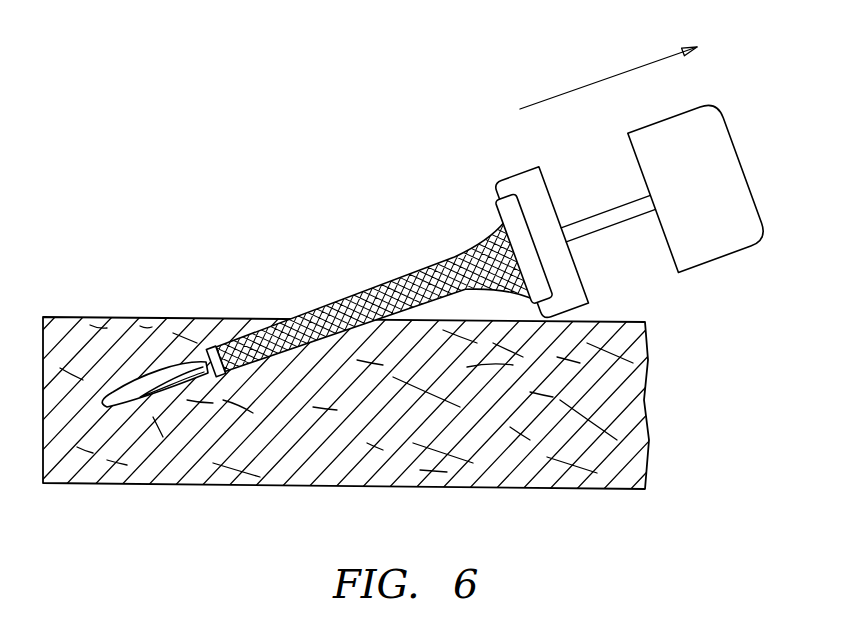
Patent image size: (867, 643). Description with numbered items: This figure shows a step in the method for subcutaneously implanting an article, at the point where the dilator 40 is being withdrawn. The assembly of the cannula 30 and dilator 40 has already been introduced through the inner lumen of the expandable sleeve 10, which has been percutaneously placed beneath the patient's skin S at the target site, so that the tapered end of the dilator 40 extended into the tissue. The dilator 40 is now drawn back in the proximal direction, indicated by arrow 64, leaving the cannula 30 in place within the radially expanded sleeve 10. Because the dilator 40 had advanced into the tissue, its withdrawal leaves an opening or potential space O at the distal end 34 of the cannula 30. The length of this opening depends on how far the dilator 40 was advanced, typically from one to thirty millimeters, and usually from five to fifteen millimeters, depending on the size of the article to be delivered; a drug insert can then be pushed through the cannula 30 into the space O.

The expandable sleeve 10 is at (353, 294).
The cannula 30 is at (513, 177).
The distal end 34 is at (205, 372).
The dilator 40 is at (739, 243).
The arrow 64 is at (590, 82).
The skin S is at (183, 318).
The opening or potential space O is at (124, 398).